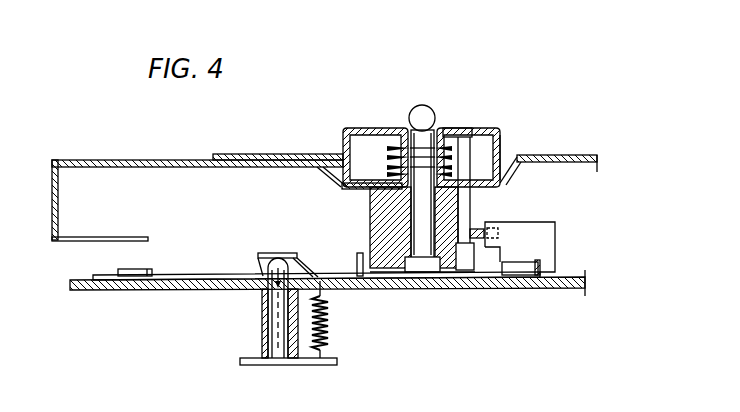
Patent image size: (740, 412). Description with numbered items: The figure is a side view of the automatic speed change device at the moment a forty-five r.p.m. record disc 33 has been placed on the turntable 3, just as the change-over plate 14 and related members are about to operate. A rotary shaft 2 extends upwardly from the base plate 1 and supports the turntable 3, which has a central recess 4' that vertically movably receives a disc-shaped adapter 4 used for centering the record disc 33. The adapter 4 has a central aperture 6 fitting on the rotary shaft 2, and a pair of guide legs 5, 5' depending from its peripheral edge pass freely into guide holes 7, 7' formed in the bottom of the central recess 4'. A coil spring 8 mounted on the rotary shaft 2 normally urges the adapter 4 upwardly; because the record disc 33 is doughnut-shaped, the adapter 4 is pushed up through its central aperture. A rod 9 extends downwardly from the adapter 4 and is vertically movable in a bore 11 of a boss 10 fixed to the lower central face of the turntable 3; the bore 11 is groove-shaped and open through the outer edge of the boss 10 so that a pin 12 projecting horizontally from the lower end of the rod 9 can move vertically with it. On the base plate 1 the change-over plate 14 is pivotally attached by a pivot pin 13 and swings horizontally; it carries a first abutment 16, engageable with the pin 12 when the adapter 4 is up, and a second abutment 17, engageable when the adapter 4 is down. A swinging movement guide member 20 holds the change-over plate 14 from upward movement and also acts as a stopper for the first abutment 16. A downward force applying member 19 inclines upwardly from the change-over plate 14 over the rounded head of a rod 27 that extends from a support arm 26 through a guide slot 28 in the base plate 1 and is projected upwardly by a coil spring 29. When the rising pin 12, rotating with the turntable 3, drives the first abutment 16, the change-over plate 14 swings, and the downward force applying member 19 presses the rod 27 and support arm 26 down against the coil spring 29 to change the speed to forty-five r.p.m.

The base plate 1 is at (103, 292).
The rotary shaft 2 is at (427, 137).
The turntable 3 is at (148, 160).
The adapter 4 is at (472, 140).
The central recess 4' is at (556, 146).
The guide leg 5 is at (355, 151).
The guide leg 5' is at (516, 143).
The central aperture 6 is at (411, 142).
The guide hole 7 is at (357, 193).
The guide hole 7' is at (520, 175).
The coil spring 8 is at (390, 160).
The rod 9 is at (461, 135).
The boss 10 is at (380, 218).
The bore 11 is at (470, 252).
The pin 12 is at (480, 230).
The pivot pin 13 is at (140, 269).
The change-over plate 14 is at (212, 276).
The first abutment 16 is at (552, 232).
The second abutment 17 is at (357, 265).
The downward force applying member 19 is at (282, 253).
The swinging movement guide member 20 is at (530, 262).
The support arm 26 is at (252, 365).
The rod 27 is at (280, 352).
The guide slot 28 is at (262, 318).
The coil spring 29 is at (330, 310).
The 45-r.p.m. record disc 33 is at (243, 154).